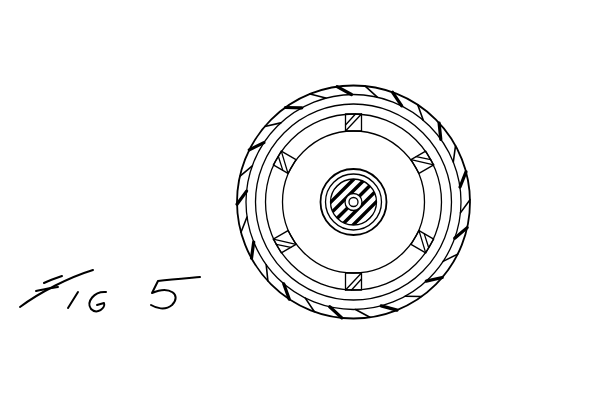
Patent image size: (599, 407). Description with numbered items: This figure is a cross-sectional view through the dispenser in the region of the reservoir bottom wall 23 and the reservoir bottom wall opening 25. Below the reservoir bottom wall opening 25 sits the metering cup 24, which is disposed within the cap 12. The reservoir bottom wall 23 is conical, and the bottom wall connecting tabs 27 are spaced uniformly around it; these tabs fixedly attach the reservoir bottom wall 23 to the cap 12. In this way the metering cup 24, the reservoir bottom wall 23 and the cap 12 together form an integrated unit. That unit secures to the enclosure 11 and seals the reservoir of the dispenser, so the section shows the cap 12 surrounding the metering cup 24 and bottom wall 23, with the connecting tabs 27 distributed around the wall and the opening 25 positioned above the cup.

The enclosure 11 is at (419, 103).
The cap 12 is at (442, 263).
The reservoir bottom wall 23 is at (322, 205).
The metering cup 24 is at (343, 170).
The reservoir bottom wall opening 25 is at (352, 207).
The bottom wall connecting tabs 27 is at (312, 120).